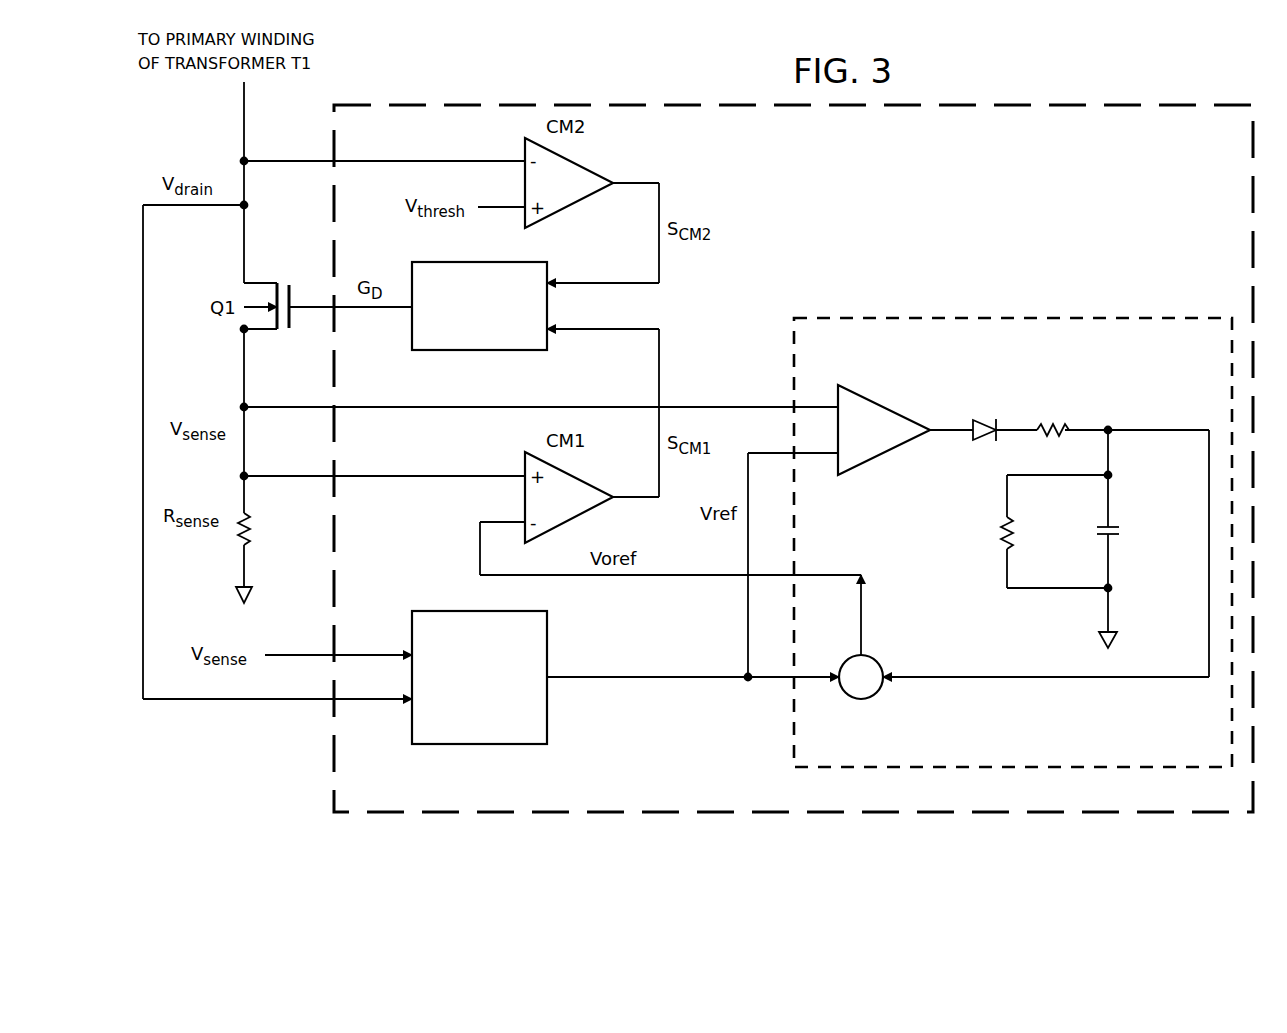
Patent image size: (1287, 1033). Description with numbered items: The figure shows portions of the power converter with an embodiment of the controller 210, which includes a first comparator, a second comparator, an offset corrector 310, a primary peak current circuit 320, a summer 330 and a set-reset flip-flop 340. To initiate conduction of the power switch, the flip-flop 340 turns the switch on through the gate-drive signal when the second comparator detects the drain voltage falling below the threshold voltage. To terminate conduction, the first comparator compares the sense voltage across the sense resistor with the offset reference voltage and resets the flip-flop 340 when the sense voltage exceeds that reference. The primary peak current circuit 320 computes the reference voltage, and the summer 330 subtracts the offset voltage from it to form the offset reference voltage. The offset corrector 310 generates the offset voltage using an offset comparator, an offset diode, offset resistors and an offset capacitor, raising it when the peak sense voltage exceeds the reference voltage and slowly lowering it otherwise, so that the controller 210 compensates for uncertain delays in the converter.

The controller 210 is at (985, 225).
The offset corrector 310 is at (1067, 317).
The primary peak current circuit 320 is at (481, 744).
The summer 330 is at (868, 699).
The set-reset flip-flop 340 is at (500, 320).